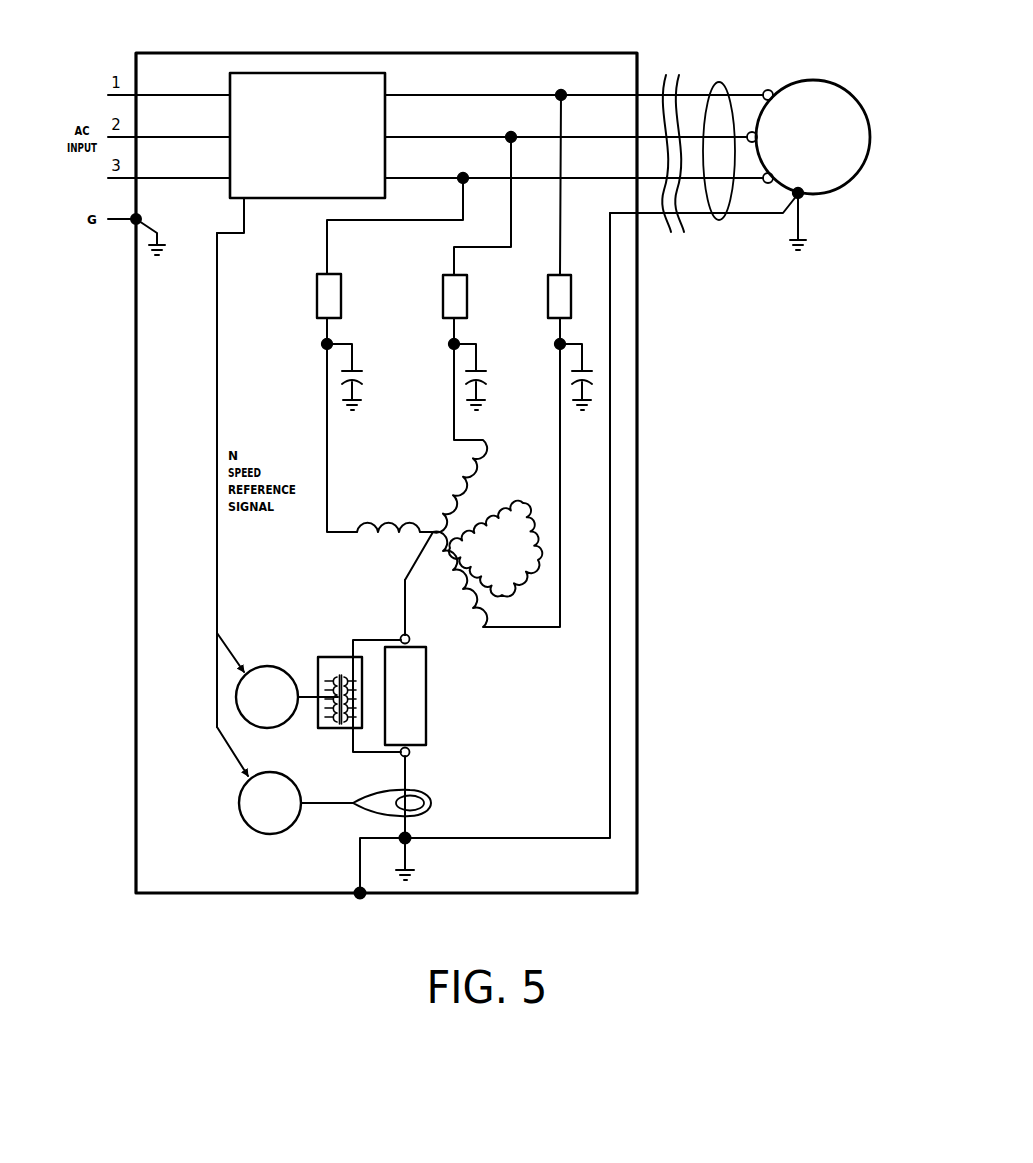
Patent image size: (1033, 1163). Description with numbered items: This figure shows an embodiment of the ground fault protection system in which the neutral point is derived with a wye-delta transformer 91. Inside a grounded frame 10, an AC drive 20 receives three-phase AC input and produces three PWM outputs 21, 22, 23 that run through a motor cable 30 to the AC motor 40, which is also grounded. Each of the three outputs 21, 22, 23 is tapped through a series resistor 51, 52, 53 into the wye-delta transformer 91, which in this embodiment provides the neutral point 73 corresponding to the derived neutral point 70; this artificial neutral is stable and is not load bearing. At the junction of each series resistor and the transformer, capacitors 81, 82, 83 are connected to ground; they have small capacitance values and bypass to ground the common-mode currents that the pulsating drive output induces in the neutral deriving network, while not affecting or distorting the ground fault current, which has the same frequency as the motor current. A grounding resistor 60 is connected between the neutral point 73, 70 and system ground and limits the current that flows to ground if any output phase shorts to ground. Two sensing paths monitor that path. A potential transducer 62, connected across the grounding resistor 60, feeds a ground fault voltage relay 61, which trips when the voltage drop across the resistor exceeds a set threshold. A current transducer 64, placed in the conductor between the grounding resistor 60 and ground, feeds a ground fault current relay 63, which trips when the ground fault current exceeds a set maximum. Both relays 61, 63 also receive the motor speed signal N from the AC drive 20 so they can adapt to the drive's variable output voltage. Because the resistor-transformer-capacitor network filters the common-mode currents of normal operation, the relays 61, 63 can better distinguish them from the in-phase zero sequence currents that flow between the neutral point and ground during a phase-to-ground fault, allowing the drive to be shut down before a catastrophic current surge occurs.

The frame 10 is at (637, 415).
The AC drive 20 is at (301, 153).
The AC drive output 21 is at (574, 87).
The AC drive output 22 is at (566, 129).
The AC drive output 23 is at (574, 170).
The motor cable 30 is at (719, 82).
The AC motor 40 is at (843, 196).
The resistor R1 51 is at (345, 271).
The resistor R2 52 is at (480, 273).
The resistor R3 53 is at (572, 270).
The grounding resistor RG 60 is at (460, 737).
The ground fault voltage relay GFVR 61 is at (287, 697).
The potential transducer T3 62 is at (340, 734).
The ground fault current relay GFCR 63 is at (270, 803).
The current transducer T2 64 is at (444, 806).
The derived neutral point 70 is at (433, 614).
The neutral point 73 is at (418, 588).
The capacitor C1 81 is at (370, 383).
The capacitor C2 82 is at (482, 336).
The capacitor C3 83 is at (584, 422).
The wye-delta transformer 91 is at (443, 485).